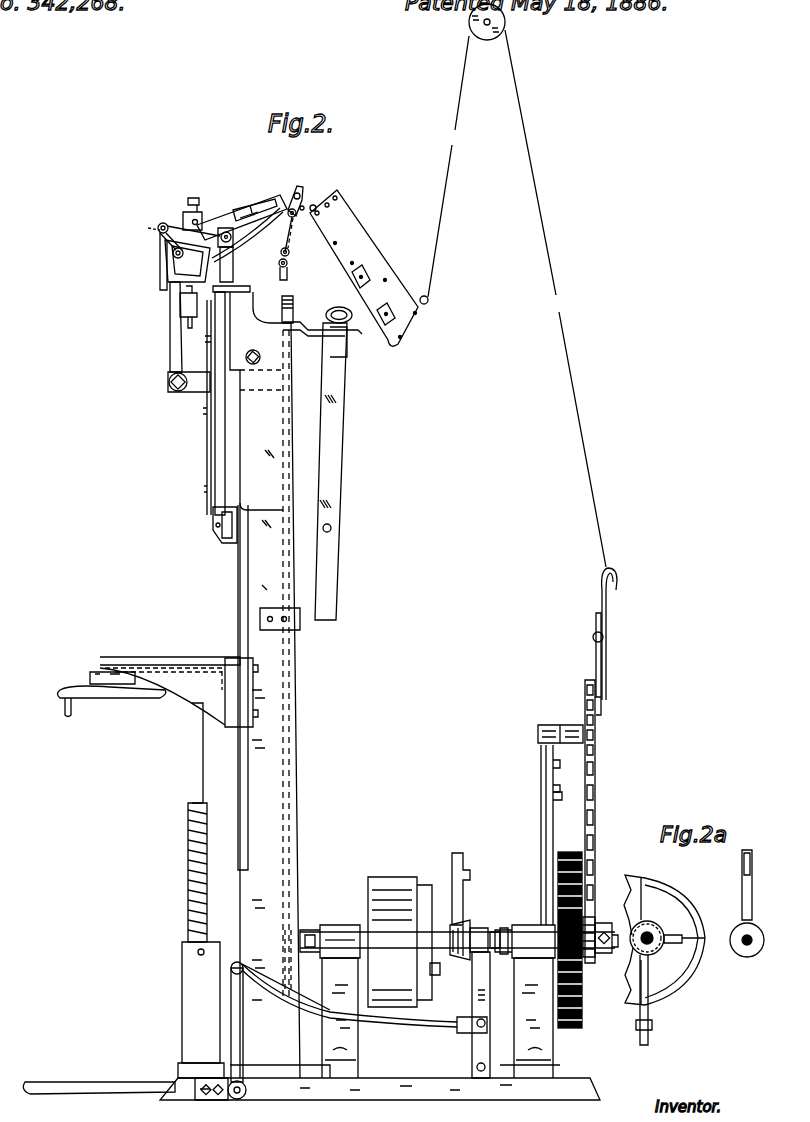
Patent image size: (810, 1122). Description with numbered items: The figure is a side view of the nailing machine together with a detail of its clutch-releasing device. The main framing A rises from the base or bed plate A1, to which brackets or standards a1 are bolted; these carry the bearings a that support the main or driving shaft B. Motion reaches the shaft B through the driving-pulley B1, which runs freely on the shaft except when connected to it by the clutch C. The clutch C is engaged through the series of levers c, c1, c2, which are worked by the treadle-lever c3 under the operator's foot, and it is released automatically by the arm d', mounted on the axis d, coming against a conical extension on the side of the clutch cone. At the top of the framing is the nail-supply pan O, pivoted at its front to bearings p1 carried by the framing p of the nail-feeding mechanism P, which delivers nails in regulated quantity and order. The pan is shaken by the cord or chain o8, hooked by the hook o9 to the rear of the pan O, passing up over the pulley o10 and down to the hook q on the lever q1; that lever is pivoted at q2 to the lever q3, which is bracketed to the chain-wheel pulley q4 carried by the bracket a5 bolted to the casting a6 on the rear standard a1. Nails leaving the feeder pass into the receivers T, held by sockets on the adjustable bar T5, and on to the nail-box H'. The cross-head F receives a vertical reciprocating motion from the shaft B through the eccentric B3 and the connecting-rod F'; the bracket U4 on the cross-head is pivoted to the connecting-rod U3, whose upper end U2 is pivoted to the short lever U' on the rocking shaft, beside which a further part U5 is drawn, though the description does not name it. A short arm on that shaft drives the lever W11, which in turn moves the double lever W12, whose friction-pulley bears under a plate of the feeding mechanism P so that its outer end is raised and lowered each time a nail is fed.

In FIG. 2, the main framing A is at (271, 682).
In FIG. 2, the base or bed plate A1 is at (380, 1093).
In FIG. 2, the main or driving shaft B is at (443, 935).
In FIG. 2A, the main or driving shaft B is at (652, 942).
In FIG. 2, the driving-pulley B1 is at (404, 942).
In FIG. 2A, the driving-pulley B1 is at (664, 931).
In FIG. 2, the eccentric B3 is at (280, 970).
In FIG. 2, the bearings a is at (345, 930).
In FIG. 2, the brackets or standards a1 is at (437, 1018).
In FIG. 2, the bracket a5 is at (560, 724).
In FIG. 2, the casting a6 is at (540, 835).
In FIG. 2, the clutch C is at (473, 928).
In FIG. 2A, the clutch C is at (652, 931).
In FIG. 2, the lever c is at (487, 1015).
In FIG. 2, the lever c1 is at (364, 998).
In FIG. 2A, the lever c1 is at (659, 1000).
In FIG. 2, the lever c2 is at (243, 1040).
In FIG. 2, the treadle-lever c3 is at (123, 898).
In FIG. 2A, the axis d is at (747, 954).
In FIG. 2, the arm d' is at (471, 889).
In FIG. 2A, the arm d' is at (734, 885).
In FIG. 2, the cross-head F is at (201, 403).
In FIG. 2, the connecting-rod F' is at (210, 517).
In FIG. 2, the nail-box H' is at (211, 524).
In FIG. 2, the nail-supply pan O is at (364, 268).
In FIG. 2, the cord or chain o8 is at (517, 298).
In FIG. 2, the hook o9 is at (434, 298).
In FIG. 2, the pulley o10 is at (497, 22).
In FIG. 2, the nail-feeding mechanism P is at (227, 210).
In FIG. 2, the main framing of nail-feeding mechanism p is at (265, 240).
In FIG. 2, the bearings p1 is at (297, 212).
In FIG. 2, the hook q is at (616, 577).
In FIG. 2, the lever q1 is at (613, 645).
In FIG. 2, the pivot q2 is at (603, 637).
In FIG. 2, the lever q3 is at (610, 664).
In FIG. 2, the chain-wheel pulley q4 is at (595, 735).
In FIG. 2, the receivers T is at (205, 315).
In FIG. 2, the bar T5 is at (178, 308).
In FIG. 2, the short lever U' is at (150, 253).
In FIG. 2, the upper end of connecting-rod U2 is at (170, 227).
In FIG. 2, the connecting-rod U3 is at (170, 336).
In FIG. 2, the bracket U4 is at (196, 388).
In FIG. 2, the plate U5 is at (199, 255).
In FIG. 2, the lever W11 is at (280, 271).
In FIG. 2, the double lever W12 is at (292, 238).